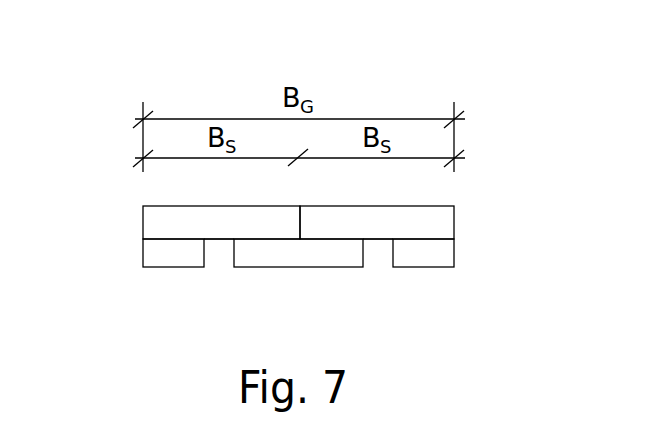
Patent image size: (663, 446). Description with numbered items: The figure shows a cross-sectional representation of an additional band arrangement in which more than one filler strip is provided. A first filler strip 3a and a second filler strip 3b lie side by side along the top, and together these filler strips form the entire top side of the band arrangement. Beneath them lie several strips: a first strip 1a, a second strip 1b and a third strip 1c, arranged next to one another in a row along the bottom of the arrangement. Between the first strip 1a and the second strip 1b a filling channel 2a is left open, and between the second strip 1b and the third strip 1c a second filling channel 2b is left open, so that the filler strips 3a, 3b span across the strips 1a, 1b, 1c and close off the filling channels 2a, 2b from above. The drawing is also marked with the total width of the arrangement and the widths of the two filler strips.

The filler strip 3a is at (160, 218).
The second filler strip 3b is at (440, 219).
The first strip 1a is at (160, 255).
The second strip 1b is at (310, 261).
The third strip 1c is at (440, 255).
The filling channel 2a is at (217, 261).
The second filling channel 2b is at (380, 261).